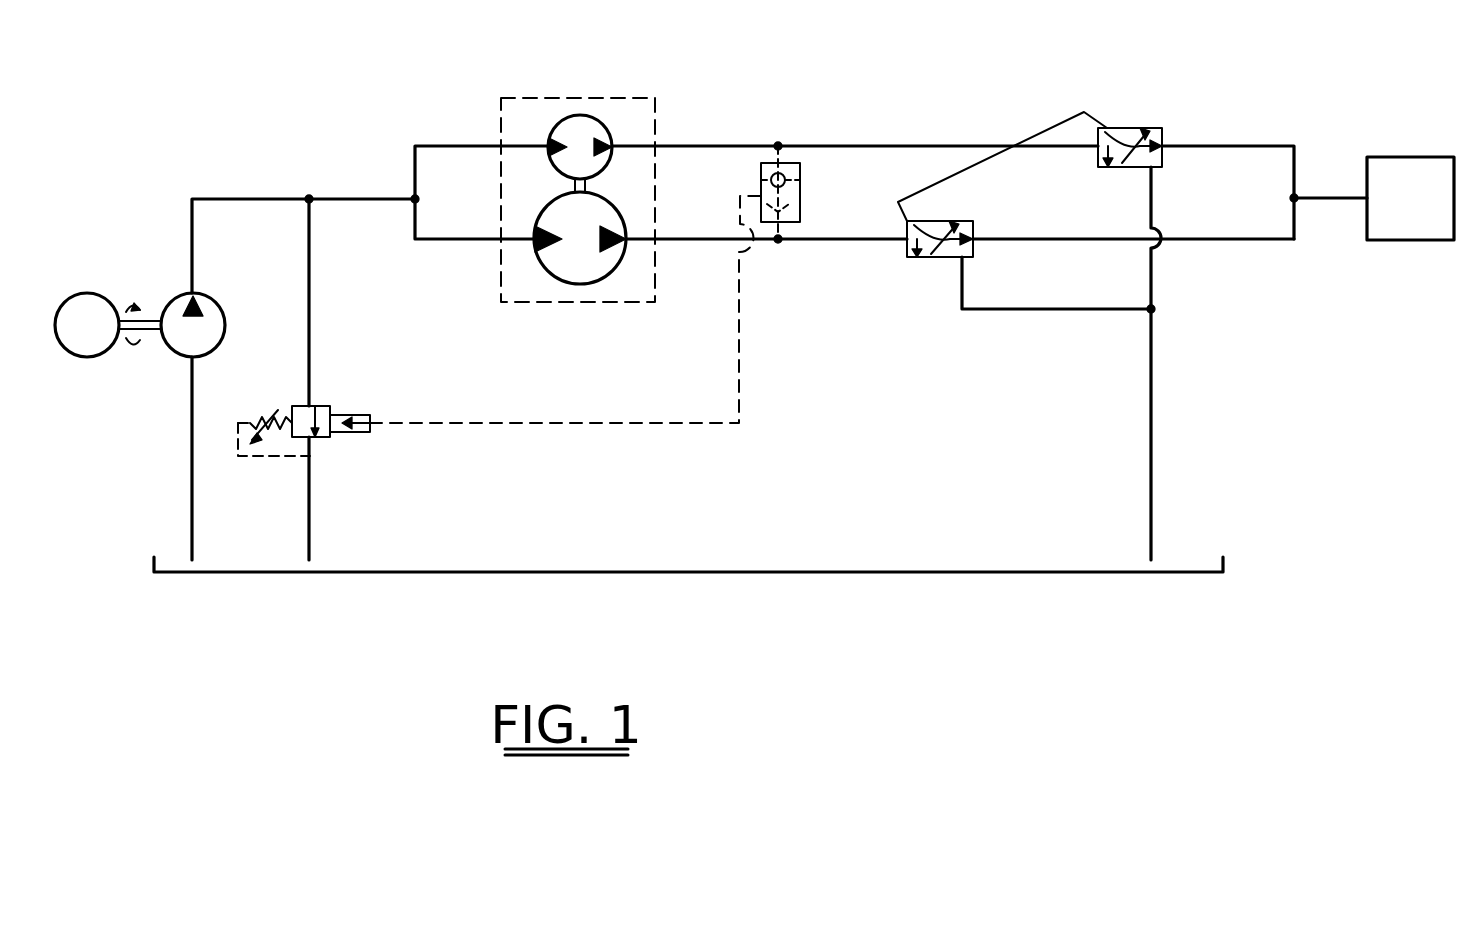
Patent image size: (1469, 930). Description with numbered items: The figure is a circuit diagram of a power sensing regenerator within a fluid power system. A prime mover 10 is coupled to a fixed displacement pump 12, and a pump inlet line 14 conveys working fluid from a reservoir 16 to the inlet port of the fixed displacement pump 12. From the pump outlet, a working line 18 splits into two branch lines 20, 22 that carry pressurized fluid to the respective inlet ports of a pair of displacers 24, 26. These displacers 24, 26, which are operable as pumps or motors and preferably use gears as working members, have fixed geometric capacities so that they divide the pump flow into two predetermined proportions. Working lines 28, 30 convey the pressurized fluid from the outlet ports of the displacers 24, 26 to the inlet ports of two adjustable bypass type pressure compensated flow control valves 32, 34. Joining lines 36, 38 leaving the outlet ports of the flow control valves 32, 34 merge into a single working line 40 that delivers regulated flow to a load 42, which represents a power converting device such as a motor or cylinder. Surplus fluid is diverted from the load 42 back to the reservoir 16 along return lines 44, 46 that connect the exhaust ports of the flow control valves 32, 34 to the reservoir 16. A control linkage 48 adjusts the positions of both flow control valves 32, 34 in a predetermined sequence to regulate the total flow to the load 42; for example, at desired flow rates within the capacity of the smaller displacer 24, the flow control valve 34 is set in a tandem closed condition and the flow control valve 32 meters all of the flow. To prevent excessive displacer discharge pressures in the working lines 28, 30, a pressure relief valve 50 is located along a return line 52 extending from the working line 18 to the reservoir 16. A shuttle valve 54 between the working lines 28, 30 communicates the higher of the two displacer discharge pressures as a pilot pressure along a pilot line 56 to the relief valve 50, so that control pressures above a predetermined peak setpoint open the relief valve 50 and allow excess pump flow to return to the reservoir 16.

The prime mover 10 is at (118, 300).
The fixed displacement pump 12 is at (220, 306).
The pump inlet line 14 is at (191, 522).
The reservoir 16 is at (778, 572).
The working line 18 is at (256, 199).
The branch line 20 is at (440, 146).
The branch line 22 is at (478, 240).
The displacer 24 is at (592, 115).
The displacer 26 is at (596, 284).
The working line 28 is at (886, 146).
The working line 30 is at (815, 240).
The flow control valve 32 is at (1151, 128).
The flow control valve 34 is at (966, 221).
The joining line 36 is at (1214, 146).
The joining line 38 is at (1188, 239).
The working line 40 is at (1316, 198).
The load 42 is at (1424, 157).
The return line 44 is at (1092, 309).
The return line 46 is at (1152, 392).
The control linkage 48 is at (1046, 129).
The pressure relief valve 50 is at (325, 406).
The return line 52 is at (310, 300).
The shuttle valve 54 is at (800, 192).
The pilot line 56 is at (583, 424).